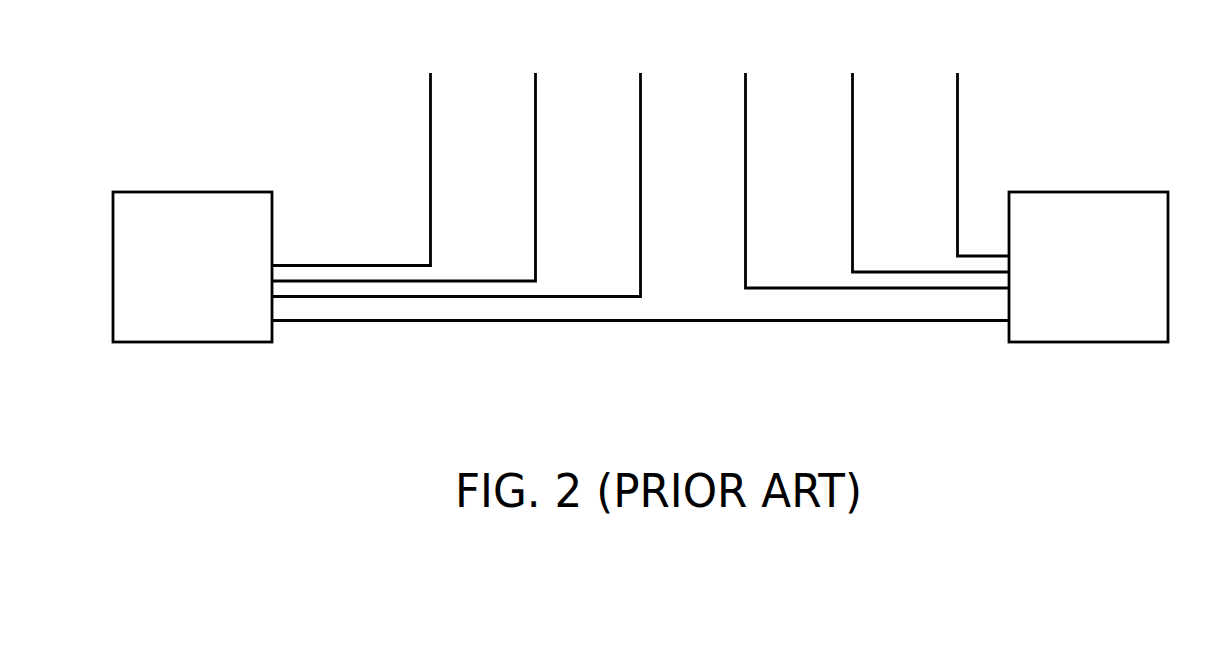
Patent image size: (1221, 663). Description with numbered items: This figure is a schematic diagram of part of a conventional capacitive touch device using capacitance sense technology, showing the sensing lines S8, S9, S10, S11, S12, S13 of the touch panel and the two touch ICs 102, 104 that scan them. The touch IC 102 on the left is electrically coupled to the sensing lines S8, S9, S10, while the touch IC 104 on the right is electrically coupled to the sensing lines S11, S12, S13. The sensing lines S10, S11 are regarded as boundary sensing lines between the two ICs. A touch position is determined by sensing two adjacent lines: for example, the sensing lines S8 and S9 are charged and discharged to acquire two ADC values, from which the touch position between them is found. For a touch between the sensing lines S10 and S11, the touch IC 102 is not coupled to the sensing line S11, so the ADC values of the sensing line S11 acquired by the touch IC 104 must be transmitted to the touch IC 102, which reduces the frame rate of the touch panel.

The touch IC 102 is at (223, 192).
The touch IC 104 is at (1097, 192).
The sensing line S8 is at (361, 151).
The sensing line S9 is at (412, 158).
The sensing line S10 is at (467, 166).
The sensing line S11 is at (865, 162).
The sensing line S12 is at (919, 154).
The sensing line S13 is at (974, 146).